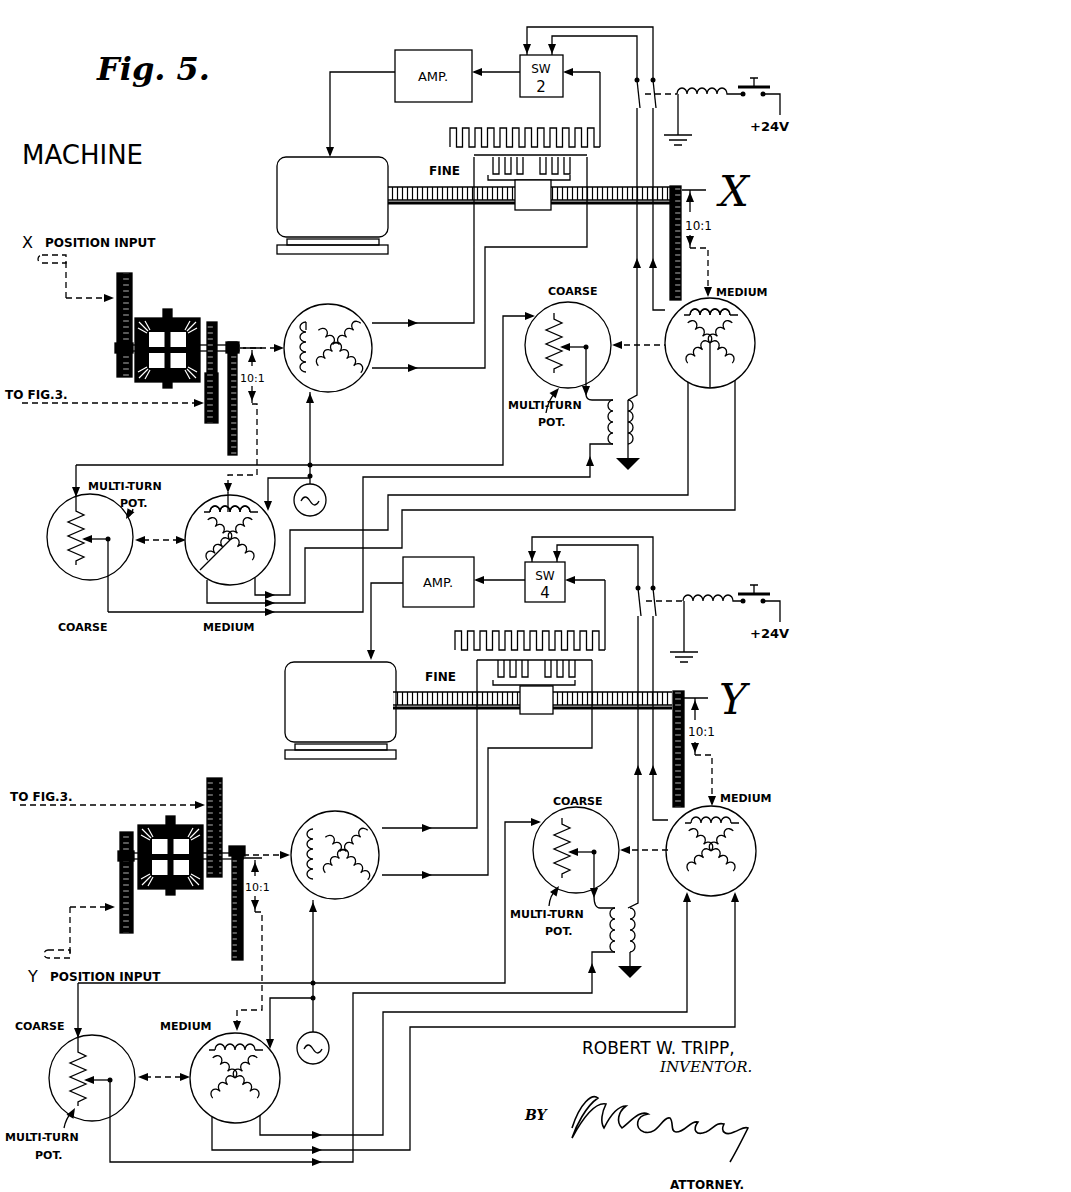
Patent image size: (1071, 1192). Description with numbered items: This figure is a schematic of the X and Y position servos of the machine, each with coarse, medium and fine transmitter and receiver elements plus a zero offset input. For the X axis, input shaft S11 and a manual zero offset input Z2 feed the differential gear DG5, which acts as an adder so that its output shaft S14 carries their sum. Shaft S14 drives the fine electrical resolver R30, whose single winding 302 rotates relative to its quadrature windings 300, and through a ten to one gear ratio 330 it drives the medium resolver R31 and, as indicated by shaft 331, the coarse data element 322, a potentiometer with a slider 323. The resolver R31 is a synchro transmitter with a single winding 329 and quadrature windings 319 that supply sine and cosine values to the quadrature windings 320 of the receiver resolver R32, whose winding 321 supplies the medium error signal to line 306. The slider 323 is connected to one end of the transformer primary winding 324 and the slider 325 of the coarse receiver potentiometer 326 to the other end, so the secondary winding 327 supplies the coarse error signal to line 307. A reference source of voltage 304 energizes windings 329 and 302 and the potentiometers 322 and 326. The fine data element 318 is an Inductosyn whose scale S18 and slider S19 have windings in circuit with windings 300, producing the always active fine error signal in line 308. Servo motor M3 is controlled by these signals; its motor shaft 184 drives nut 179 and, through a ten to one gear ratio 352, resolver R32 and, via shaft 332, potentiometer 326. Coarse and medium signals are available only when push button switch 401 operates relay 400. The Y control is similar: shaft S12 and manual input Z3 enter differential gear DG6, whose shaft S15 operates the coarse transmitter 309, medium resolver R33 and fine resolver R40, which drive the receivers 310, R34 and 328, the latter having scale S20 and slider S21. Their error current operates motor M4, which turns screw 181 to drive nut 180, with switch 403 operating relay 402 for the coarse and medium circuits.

The coarse error signal line 307 is at (617, 37).
The medium error signal line 306 is at (654, 47).
The relay 400 is at (724, 84).
The switch 401 is at (752, 80).
The fine error signal line 308 is at (601, 85).
The scale S18 is at (534, 128).
The fine data element 318 is at (458, 152).
The slider S19 is at (570, 163).
The motor shaft 184 is at (438, 203).
The nut 179 is at (548, 214).
The 10 to 1 gear ratio 352 is at (683, 187).
The servo motor M3 is at (279, 162).
The quadrature windings 300 is at (368, 322).
The electrical resolver R30 is at (322, 308).
The single winding 302 is at (305, 320).
The reference source of voltage 304 is at (330, 489).
The differential gear DG5 is at (183, 318).
The 10 to 1 gear ratio 330 is at (232, 340).
The manual input Z2 is at (106, 302).
The shaft S11 is at (126, 404).
The output shaft S14 is at (278, 345).
The coarse data element 322 is at (44, 534).
The slider 323 is at (106, 540).
The shaft 331 is at (160, 540).
The resolver R31 is at (182, 534).
The single winding 329 is at (226, 503).
The quadrature windings 319 is at (200, 570).
The coarse data receiver potentiometer 326 is at (527, 362).
The slider 325 is at (586, 345).
The transformer primary winding 324 is at (600, 434).
The secondary winding 327 is at (632, 428).
The shaft 332 is at (658, 350).
The resolver R32 is at (752, 362).
The winding 321 is at (738, 315).
The quadrature windings 320 is at (710, 388).
The relay 402 is at (685, 600).
The switch 403 is at (759, 592).
The scale S20 is at (556, 631).
The fine receiver 328 is at (460, 656).
The slider S21 is at (571, 667).
The screw 181 is at (447, 708).
The nut 180 is at (532, 712).
The motor M4 is at (285, 690).
The electrical resolver R40 is at (337, 812).
The shaft S15 is at (278, 845).
The differential gear DG6 is at (160, 890).
The shaft S12 is at (158, 810).
The manual input Z3 is at (106, 905).
The coarse data transmitter element 309 is at (45, 1083).
The medium data transmitter resolver R33 is at (196, 1108).
The coarse receiver 310 is at (622, 818).
The medium receiver resolver R34 is at (752, 872).